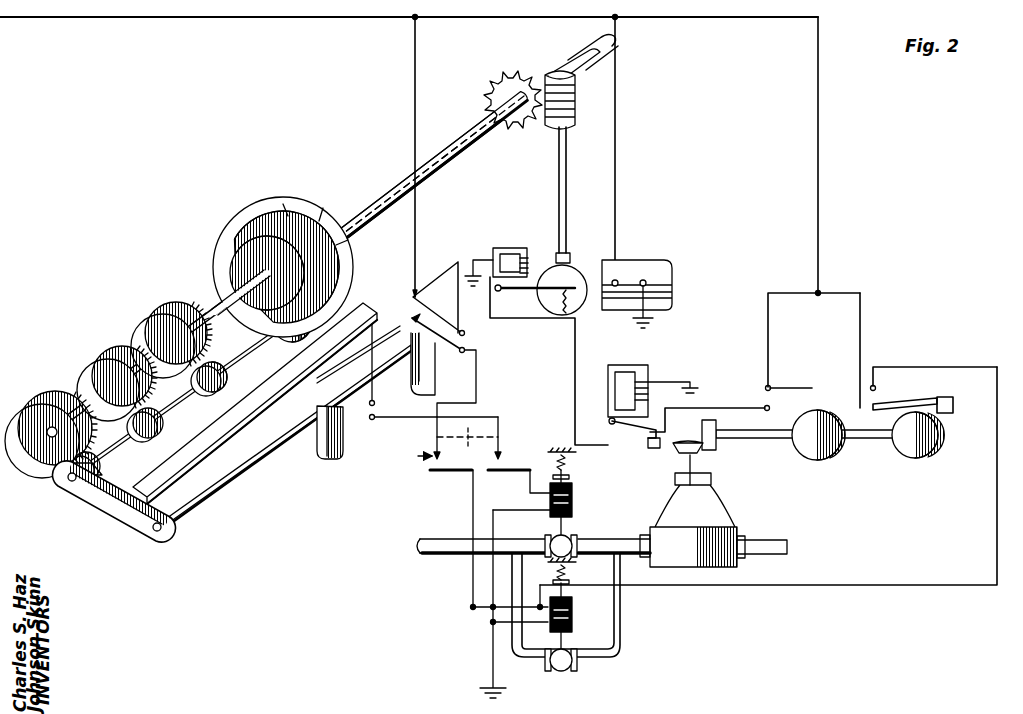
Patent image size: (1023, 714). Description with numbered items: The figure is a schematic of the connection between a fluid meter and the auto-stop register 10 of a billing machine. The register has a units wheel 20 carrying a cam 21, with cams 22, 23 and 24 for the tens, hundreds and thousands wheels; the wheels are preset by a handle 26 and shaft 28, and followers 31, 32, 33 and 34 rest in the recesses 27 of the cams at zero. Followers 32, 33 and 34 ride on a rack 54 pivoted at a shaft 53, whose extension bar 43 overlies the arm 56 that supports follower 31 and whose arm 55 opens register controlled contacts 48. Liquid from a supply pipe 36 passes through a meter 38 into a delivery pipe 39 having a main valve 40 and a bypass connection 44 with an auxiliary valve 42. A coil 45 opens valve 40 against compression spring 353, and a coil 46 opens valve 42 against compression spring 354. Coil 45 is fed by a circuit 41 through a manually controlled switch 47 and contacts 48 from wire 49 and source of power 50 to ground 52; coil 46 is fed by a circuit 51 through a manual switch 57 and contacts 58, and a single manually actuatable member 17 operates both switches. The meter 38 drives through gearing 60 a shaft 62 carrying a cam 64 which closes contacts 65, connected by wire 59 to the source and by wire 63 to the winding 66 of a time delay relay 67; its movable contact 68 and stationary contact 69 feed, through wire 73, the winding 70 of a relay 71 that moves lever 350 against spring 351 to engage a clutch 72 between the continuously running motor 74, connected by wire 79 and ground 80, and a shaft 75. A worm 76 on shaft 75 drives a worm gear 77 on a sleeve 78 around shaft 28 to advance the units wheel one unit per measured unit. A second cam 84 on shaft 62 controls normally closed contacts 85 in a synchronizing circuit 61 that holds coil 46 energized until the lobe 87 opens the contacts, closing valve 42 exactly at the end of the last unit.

The auto-stop register 10 is at (202, 228).
The manually actuatable member 17 is at (467, 438).
The units wheel 20 is at (277, 197).
The cam 21 is at (230, 262).
The cam 22 is at (150, 312).
The cam 23 is at (100, 350).
The cam 24 is at (48, 398).
The handle 26 is at (612, 40).
The recesses 27 is at (173, 350).
The shaft 28 is at (560, 58).
The follower 31 is at (284, 340).
The follower 32 is at (216, 370).
The follower 33 is at (162, 432).
The follower 34 is at (60, 478).
The pipe 36 is at (780, 538).
The meter 38 is at (720, 503).
The delivery pipe 39 is at (441, 522).
The main valve 40 is at (568, 538).
The circuit 41 is at (493, 413).
The auxiliary valve 42 is at (556, 676).
The extension bar 43 is at (368, 302).
The bypass connection 44 is at (622, 612).
The electro-magnetic coil 45 is at (574, 500).
The electro-magnetic coil 46 is at (574, 612).
The manually controlled switch 47 is at (520, 468).
The register controlled contacts 48 is at (323, 388).
The wire 49 is at (417, 212).
The source of power 50 is at (190, 18).
The circuit 51 is at (476, 392).
The ground 52 is at (487, 683).
The shaft 53 is at (237, 476).
The rack 54 is at (128, 510).
The arm 55 is at (346, 440).
The arm 56 is at (435, 370).
The manual switch 57 is at (414, 456).
The contacts 58 is at (454, 330).
The wire 59 is at (766, 315).
The gearing 60 is at (703, 450).
The synchronizing circuit 61 is at (862, 318).
The shaft 62 is at (870, 447).
The wire 63 is at (756, 406).
The cam 64 is at (823, 460).
The contacts 65 is at (812, 394).
The winding 66 is at (652, 375).
The time delay relay 67 is at (620, 365).
The movable contact 68 is at (612, 425).
The stationary contact 69 is at (650, 440).
The winding 70 is at (527, 262).
The relay 71 is at (498, 247).
The clutch 72 is at (572, 262).
The wire 73 is at (572, 340).
The motor 74 is at (650, 262).
The shaft 75 is at (568, 183).
The worm 76 is at (551, 125).
The worm gear 77 is at (498, 78).
The sleeve 78 is at (393, 183).
The wire 79 is at (617, 103).
The ground 80 is at (656, 320).
The cam 84 is at (940, 435).
The contacts 85 is at (945, 395).
The lobe 87 is at (903, 409).
The lever 350 is at (540, 290).
The spring 351 is at (575, 300).
The compression spring 353 is at (568, 462).
The compression spring 354 is at (568, 570).